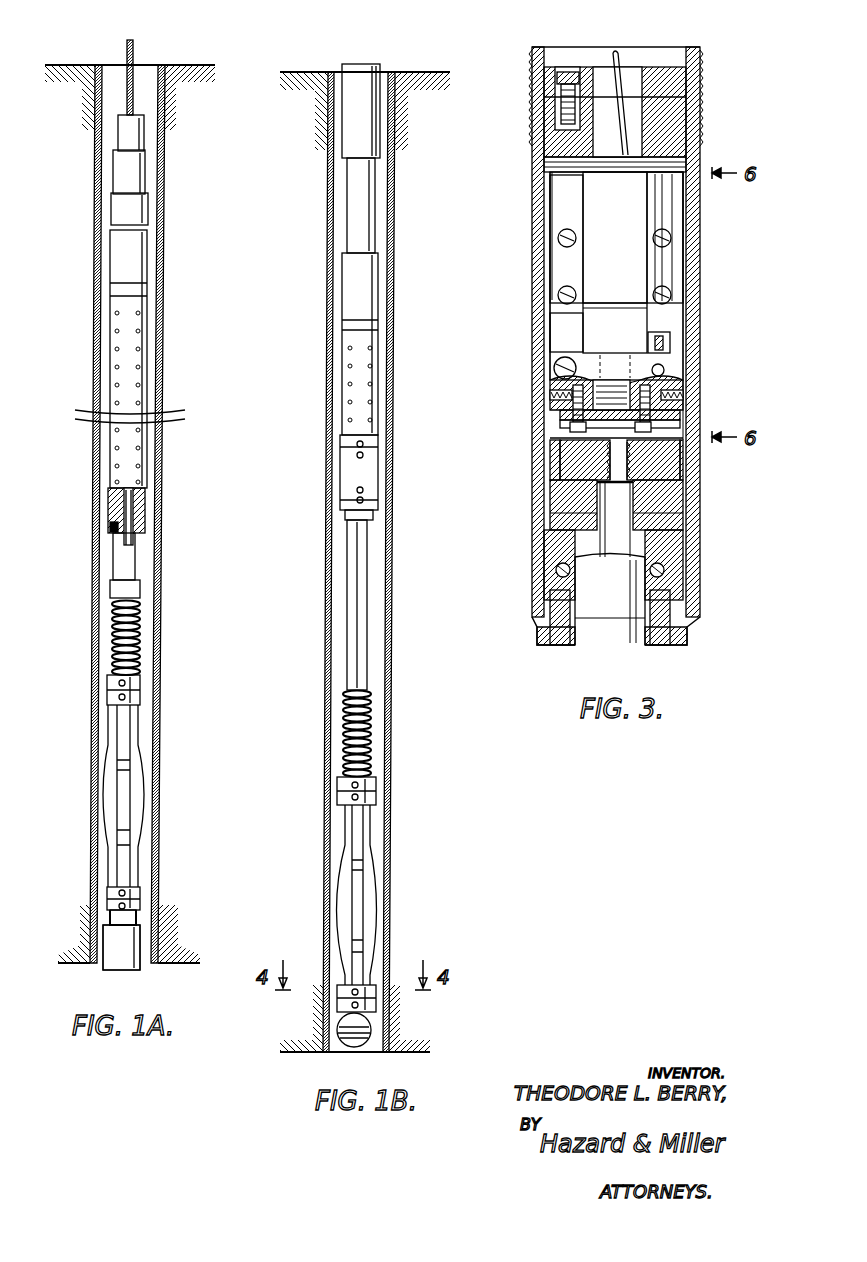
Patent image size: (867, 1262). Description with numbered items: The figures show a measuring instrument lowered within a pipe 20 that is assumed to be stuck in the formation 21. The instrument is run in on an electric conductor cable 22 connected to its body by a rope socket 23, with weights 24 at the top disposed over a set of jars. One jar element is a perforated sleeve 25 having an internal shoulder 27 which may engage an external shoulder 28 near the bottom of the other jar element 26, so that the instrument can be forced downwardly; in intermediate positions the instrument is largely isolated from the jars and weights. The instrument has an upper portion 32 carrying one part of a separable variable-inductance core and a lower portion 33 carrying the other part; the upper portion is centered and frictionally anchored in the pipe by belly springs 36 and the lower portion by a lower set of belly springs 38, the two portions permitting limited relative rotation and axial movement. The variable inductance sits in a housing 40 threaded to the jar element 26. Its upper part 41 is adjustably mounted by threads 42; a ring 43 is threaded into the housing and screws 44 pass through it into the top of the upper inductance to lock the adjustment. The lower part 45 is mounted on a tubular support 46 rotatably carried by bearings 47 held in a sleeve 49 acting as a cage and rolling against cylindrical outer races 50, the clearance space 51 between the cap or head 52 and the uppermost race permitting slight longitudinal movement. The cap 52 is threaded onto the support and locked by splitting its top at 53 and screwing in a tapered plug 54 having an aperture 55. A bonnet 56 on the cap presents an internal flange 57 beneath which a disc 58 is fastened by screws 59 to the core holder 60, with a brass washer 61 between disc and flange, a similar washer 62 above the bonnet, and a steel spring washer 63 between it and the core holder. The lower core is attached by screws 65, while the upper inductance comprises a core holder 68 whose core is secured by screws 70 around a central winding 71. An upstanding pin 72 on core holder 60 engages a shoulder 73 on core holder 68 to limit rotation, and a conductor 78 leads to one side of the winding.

In FIG. 1A, the pipe 20 is at (165, 283).
In FIG. 1B, the pipe 20 is at (393, 665).
In FIG. 1A, the formation 21 is at (95, 105).
In FIG. 1B, the formation 21 is at (325, 108).
In FIG. 1A, the electric conductor cable 22 is at (134, 62).
In FIG. 1A, the rope socket 23 is at (123, 140).
In FIG. 1A, the weights 24 is at (118, 213).
In FIG. 1A, the perforated sleeve 25 is at (120, 378).
In FIG. 1A, the jar element 26 is at (120, 578).
In FIG. 1A, the internal shoulder 27 is at (145, 520).
In FIG. 1A, the external shoulder 28 is at (115, 530).
In FIG. 1A, the upper portion 32 is at (106, 946).
In FIG. 1B, the lower portion 33 is at (347, 629).
In FIG. 1A, the belly springs 36 is at (125, 768).
In FIG. 1B, the lower set of belly springs 38 is at (352, 862).
In FIG. 1A, the housing 40 is at (130, 960).
In FIG. 1A, the upper part of the variable inductance 41 is at (105, 930).
In FIG. 3, the upper part of the variable inductance 41 is at (566, 197).
In FIG. 3, the threads 42 is at (540, 112).
In FIG. 3, the ring 43 is at (678, 85).
In FIG. 3, the screws 44 is at (555, 80).
In FIG. 3, the lower part of the variable inductance 45 is at (556, 327).
In FIG. 3, the tubular support 46 is at (606, 640).
In FIG. 3, the bearings 47 is at (665, 565).
In FIG. 3, the sleeve 49 is at (660, 612).
In FIG. 3, the outer races 50 is at (680, 580).
In FIG. 3, the clearance space 51 is at (548, 540).
In FIG. 3, the cap or head 52 is at (672, 490).
In FIG. 3, the split top 53 is at (590, 480).
In FIG. 3, the tapered plug 54 is at (565, 510).
In FIG. 3, the aperture 55 is at (618, 493).
In FIG. 3, the bonnet 56 is at (675, 438).
In FIG. 3, the internal flange 57 is at (562, 410).
In FIG. 3, the disc 58 is at (560, 450).
In FIG. 3, the screws 59 is at (660, 410).
In FIG. 3, the core holder 60 is at (672, 385).
In FIG. 3, the brass washer 61 is at (607, 425).
In FIG. 3, the washer 62 is at (555, 403).
In FIG. 3, the steel spring washer 63 is at (555, 393).
In FIG. 3, the screws 65 is at (566, 363).
In FIG. 3, the core holder 68 is at (563, 273).
In FIG. 3, the screws 70 is at (562, 240).
In FIG. 3, the solenoid or winding 71 is at (622, 266).
In FIG. 3, the upstanding pin 72 is at (655, 342).
In FIG. 3, the shoulder 73 is at (672, 342).
In FIG. 3, the conductor 78 is at (622, 80).